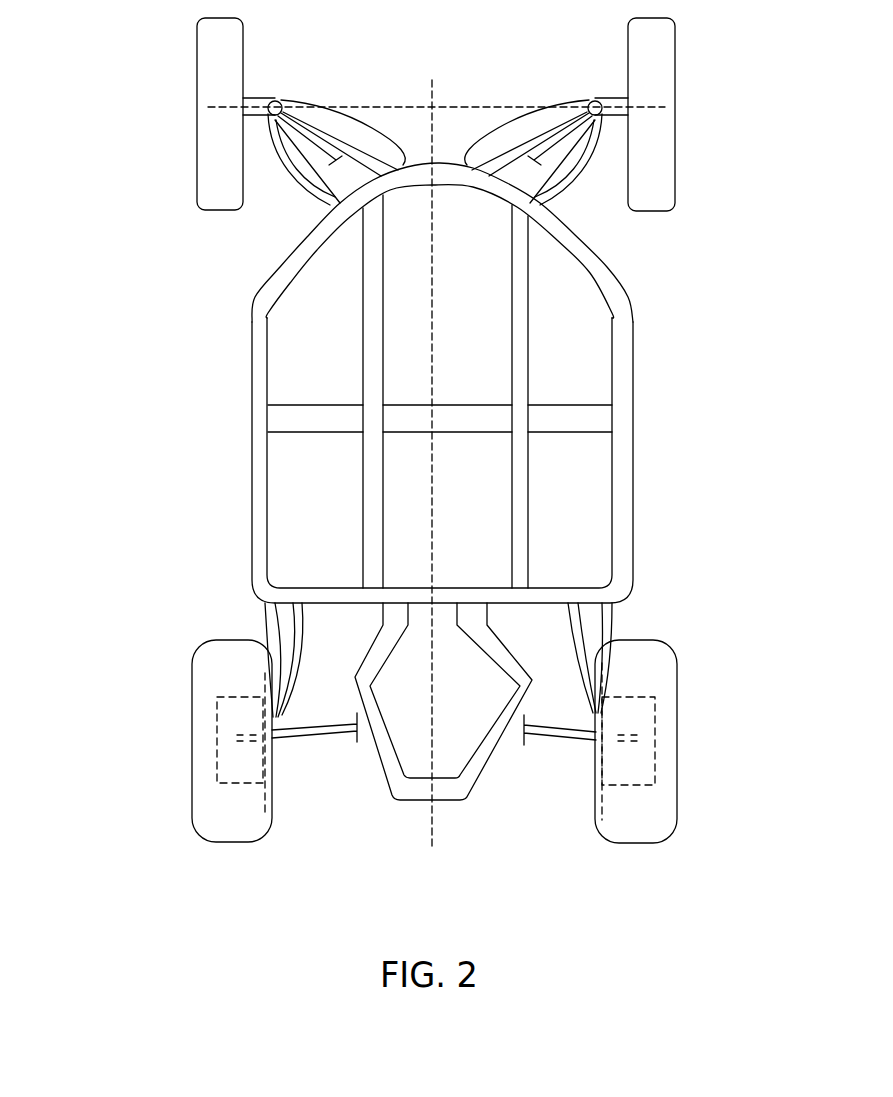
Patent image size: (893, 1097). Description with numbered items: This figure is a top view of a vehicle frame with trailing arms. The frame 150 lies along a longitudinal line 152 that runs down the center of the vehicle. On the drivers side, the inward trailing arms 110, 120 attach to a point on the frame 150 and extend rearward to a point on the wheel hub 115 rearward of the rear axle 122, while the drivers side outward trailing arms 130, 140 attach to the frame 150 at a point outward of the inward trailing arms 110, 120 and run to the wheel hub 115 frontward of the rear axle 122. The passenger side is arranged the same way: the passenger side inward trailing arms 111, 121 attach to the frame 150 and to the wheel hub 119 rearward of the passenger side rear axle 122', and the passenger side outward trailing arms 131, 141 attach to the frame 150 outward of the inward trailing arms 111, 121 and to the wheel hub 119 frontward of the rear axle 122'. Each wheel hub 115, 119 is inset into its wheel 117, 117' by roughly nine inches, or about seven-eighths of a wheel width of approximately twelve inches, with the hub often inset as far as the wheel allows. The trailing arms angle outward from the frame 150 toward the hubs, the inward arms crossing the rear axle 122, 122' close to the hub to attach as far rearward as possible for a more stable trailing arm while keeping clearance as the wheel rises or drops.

The frame 150 is at (625, 568).
The longitudinal line 152 is at (445, 832).
The drivers side inward trailing arm 110 is at (170, 654).
The drivers side inward trailing arm 120 is at (283, 611).
The drivers side outward trailing arm 130 is at (168, 660).
The drivers side outward trailing arm 140 is at (262, 634).
The passenger side inward trailing arm 111 is at (651, 658).
The passenger side inward trailing arm 121 is at (593, 630).
The passenger side trailing arm 131 is at (681, 637).
The passenger side trailing arm 141 is at (624, 602).
The wheel hub 115 is at (218, 720).
The wheel hub 119 is at (655, 725).
The wheel 117 is at (170, 741).
The right rear wheel 117' is at (691, 745).
The rear axle 122 is at (314, 768).
The right tie rod 122' is at (543, 769).